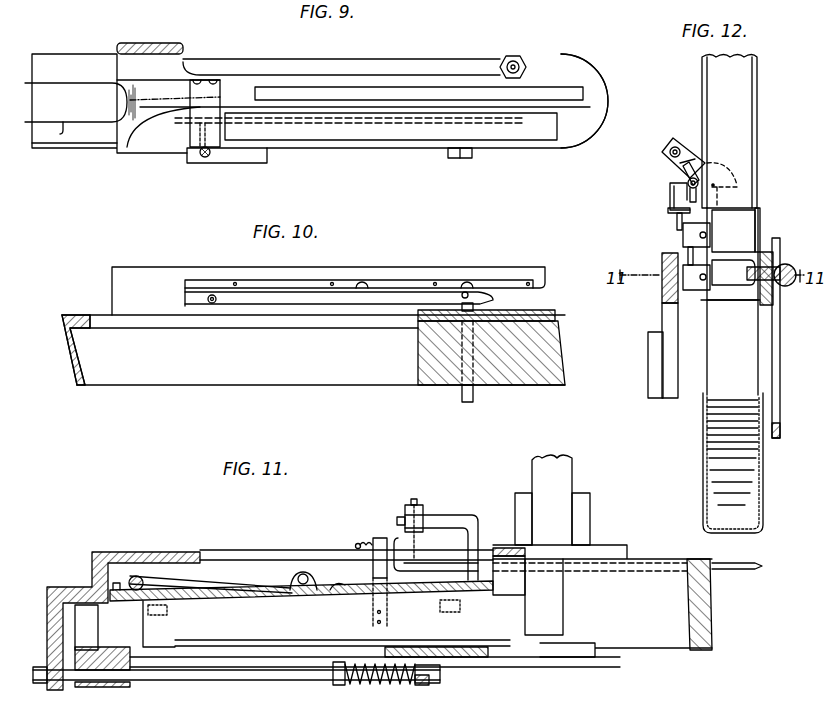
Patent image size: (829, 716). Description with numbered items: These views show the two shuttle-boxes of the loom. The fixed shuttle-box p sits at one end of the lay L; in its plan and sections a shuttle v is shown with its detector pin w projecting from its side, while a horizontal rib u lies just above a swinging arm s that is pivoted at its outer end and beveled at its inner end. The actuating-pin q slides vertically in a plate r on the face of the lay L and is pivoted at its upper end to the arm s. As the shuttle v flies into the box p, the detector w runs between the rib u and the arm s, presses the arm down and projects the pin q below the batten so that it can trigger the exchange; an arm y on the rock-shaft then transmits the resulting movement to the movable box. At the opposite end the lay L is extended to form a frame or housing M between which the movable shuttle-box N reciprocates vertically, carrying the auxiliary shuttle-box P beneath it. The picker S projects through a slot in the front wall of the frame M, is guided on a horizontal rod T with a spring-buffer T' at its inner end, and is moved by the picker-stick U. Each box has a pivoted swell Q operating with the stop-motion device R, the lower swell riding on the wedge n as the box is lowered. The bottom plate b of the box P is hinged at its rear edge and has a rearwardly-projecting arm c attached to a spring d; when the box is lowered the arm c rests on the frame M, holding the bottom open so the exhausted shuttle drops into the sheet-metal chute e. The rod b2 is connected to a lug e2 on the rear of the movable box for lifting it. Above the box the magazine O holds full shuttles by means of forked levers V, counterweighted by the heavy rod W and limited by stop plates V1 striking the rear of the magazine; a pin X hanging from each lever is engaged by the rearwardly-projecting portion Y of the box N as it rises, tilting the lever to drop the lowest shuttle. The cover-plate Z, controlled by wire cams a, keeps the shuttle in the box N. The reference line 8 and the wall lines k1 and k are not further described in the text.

In FIG. 9, the reference line 8 is at (207, 0).
In FIG. 9, the lay L is at (320, 100).
In FIG. 10, the lay L is at (313, 347).
In FIG. 11, the lay L is at (712, 605).
In FIG. 9, the shuttle v is at (76, 102).
In FIG. 9, the detector pin w is at (60, 136).
In FIG. 9, the arm y is at (207, 157).
In FIG. 9, the plate r is at (245, 155).
In FIG. 9, the fixed shuttle-box p is at (540, 120).
In FIG. 10, the fixed shuttle-box p is at (400, 268).
In FIG. 10, the rib u is at (447, 283).
In FIG. 10, the swinging arm s is at (370, 300).
In FIG. 10, the actuating-pin q is at (473, 395).
In FIG. 11, the frame or housing M is at (100, 553).
In FIG. 12, the frame or housing M is at (662, 255).
In FIG. 11, the picker S is at (102, 637).
In FIG. 12, the picker S is at (784, 287).
In FIG. 11, the picker-stick U is at (100, 670).
In FIG. 12, the picker-stick U is at (780, 388).
In FIG. 11, the horizontal rod T is at (236, 691).
In FIG. 12, the horizontal rod T is at (774, 261).
In FIG. 11, the spring-buffer T' is at (386, 689).
In FIG. 11, the auxiliary shuttle-box P is at (170, 601).
In FIG. 12, the auxiliary shuttle-box P is at (745, 305).
In FIG. 11, the bottom plate b is at (240, 620).
In FIG. 12, the bottom plate b is at (727, 300).
In FIG. 11, the lug e2 is at (287, 578).
In FIG. 11, the rod b2 is at (305, 575).
In FIG. 11, the swell Q is at (339, 580).
In FIG. 11, the spring d is at (380, 538).
In FIG. 11, the arm c is at (435, 562).
In FIG. 11, the stop-motion device R is at (470, 518).
In FIG. 11, the wedge n is at (508, 585).
In FIG. 12, the shuttle-carrier or magazine O is at (735, 143).
In FIG. 12, the column wall k1 is at (702, 74).
In FIG. 12, the column wall k is at (757, 74).
In FIG. 12, the heavy rod W is at (676, 146).
In FIG. 12, the stop plate V1 is at (683, 170).
In FIG. 12, the forked lever V is at (737, 170).
In FIG. 12, the wire cam a is at (668, 186).
In FIG. 12, the pin X is at (672, 199).
In FIG. 12, the rearwardly-projecting portion Y is at (670, 212).
In FIG. 12, the cover-plate Z is at (678, 222).
In FIG. 12, the movable shuttle-box N is at (772, 200).
In FIG. 12, the sheet-metal chute e is at (741, 463).